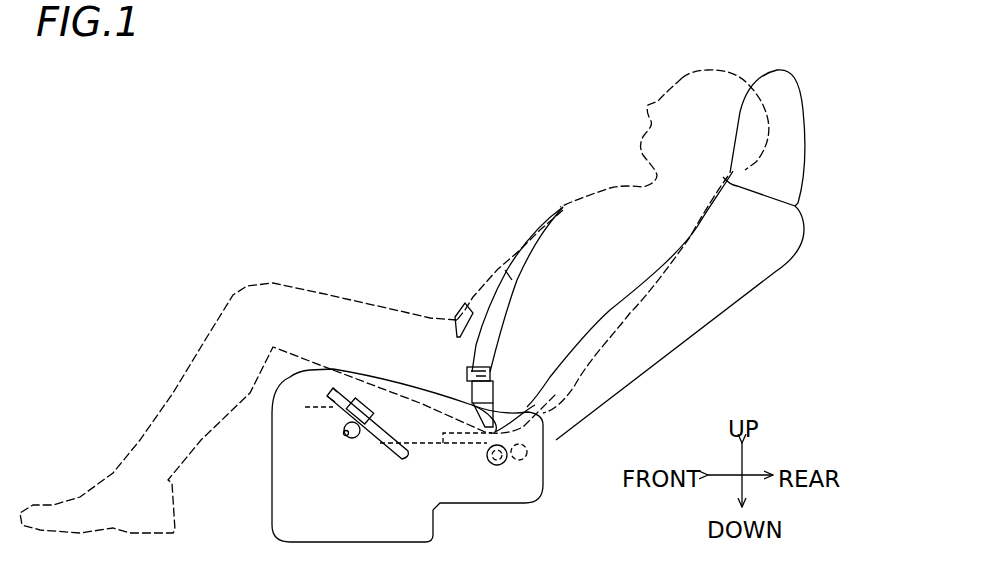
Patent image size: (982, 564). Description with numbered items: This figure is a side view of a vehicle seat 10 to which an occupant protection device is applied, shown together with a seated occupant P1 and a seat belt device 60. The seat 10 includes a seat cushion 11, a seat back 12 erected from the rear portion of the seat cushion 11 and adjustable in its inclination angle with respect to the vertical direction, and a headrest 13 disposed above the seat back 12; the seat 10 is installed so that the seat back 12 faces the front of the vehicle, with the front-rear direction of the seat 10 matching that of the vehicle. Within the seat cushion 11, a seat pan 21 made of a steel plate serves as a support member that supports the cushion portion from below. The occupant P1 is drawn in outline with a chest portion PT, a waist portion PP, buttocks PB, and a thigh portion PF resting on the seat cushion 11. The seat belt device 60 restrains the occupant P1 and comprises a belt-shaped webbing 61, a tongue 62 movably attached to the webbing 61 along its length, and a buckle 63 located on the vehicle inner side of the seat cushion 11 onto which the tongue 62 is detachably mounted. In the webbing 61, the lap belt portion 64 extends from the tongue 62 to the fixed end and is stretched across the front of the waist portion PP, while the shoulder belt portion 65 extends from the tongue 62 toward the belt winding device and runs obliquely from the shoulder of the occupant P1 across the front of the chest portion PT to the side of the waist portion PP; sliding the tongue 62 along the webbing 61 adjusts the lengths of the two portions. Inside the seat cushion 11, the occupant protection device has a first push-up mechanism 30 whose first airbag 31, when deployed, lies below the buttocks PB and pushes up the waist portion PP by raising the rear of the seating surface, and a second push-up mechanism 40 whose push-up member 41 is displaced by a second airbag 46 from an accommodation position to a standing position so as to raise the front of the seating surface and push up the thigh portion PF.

The vehicle seat 10 is at (532, 313).
The seat cushion 11 is at (270, 462).
The seat back 12 is at (705, 323).
The headrest 13 is at (797, 87).
The seat pan 21 is at (318, 407).
The first push-up mechanism 30 is at (460, 449).
The first airbag 31 is at (418, 450).
The second push-up mechanism 40 is at (358, 413).
The push-up member 41 is at (362, 398).
The second airbag 46 is at (333, 392).
The seat belt device 60 is at (464, 336).
The webbing 61 is at (447, 291).
The tongue 62 is at (497, 367).
The buckle 63 is at (467, 377).
The lap belt portion 64 is at (462, 317).
The shoulder belt portion 65 is at (508, 273).
The occupant P1 is at (682, 78).
The chest portion PT is at (547, 215).
The waist portion PP is at (563, 386).
The buttocks PB is at (557, 437).
The thigh portion PF is at (365, 298).